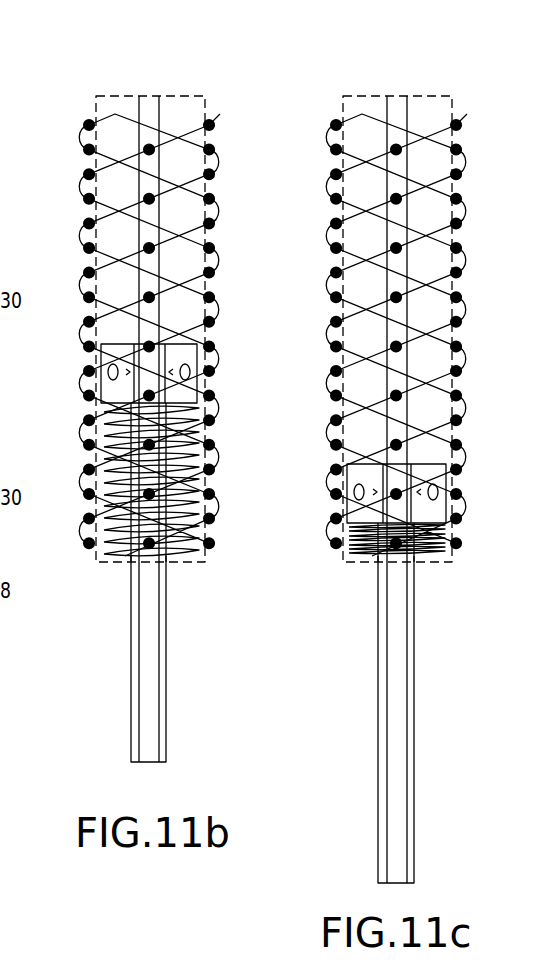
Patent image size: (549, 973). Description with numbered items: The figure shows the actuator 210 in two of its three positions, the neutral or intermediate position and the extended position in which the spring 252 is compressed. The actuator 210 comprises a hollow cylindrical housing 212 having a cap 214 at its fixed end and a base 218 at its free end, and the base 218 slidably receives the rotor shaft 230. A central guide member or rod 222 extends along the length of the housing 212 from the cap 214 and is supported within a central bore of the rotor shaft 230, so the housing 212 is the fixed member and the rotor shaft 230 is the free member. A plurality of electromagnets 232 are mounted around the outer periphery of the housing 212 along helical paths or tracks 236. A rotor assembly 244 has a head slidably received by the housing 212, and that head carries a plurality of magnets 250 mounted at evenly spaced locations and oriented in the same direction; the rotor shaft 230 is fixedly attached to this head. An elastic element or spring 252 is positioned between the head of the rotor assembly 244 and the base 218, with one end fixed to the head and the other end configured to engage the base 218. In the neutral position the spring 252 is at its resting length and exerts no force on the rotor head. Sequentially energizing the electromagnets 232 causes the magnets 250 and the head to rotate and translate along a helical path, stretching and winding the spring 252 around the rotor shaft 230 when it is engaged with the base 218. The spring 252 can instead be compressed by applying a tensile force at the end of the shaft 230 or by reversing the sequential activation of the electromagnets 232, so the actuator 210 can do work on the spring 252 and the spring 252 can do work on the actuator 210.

In FIG. 11B, the actuator 210 is at (90, 53).
In FIG. 11C, the actuator 210 is at (337, 53).
In FIG. 11B, the hollow cylindrical casing or housing 212 is at (80, 163).
In FIG. 11C, the hollow cylindrical casing or housing 212 is at (328, 163).
In FIG. 11B, the cap 214 is at (176, 95).
In FIG. 11C, the cap 214 is at (436, 95).
In FIG. 11B, the base 218 is at (188, 562).
In FIG. 11C, the base 218 is at (433, 560).
In FIG. 11B, the central guide member or rod 222 is at (170, 278).
In FIG. 11C, the central guide member or rod 222 is at (413, 263).
In FIG. 11B, the rotor shaft 230 is at (170, 660).
In FIG. 11C, the rotor shaft 230 is at (414, 660).
In FIG. 11B, the electromagnets 232 is at (86, 346).
In FIG. 11C, the electromagnets 232 is at (467, 370).
In FIG. 11B, the helical paths or tracks 236 is at (212, 180).
In FIG. 11C, the helical paths or tracks 236 is at (418, 194).
In FIG. 11B, the rotor assembly 244 is at (218, 390).
In FIG. 11C, the rotor assembly 244 is at (465, 462).
In FIG. 11B, the magnets 250 is at (0, 137).
In FIG. 11C, the magnets 250 is at (446, 490).
In FIG. 11B, the elastic element or spring 252 is at (95, 440).
In FIG. 11C, the elastic element or spring 252 is at (453, 533).